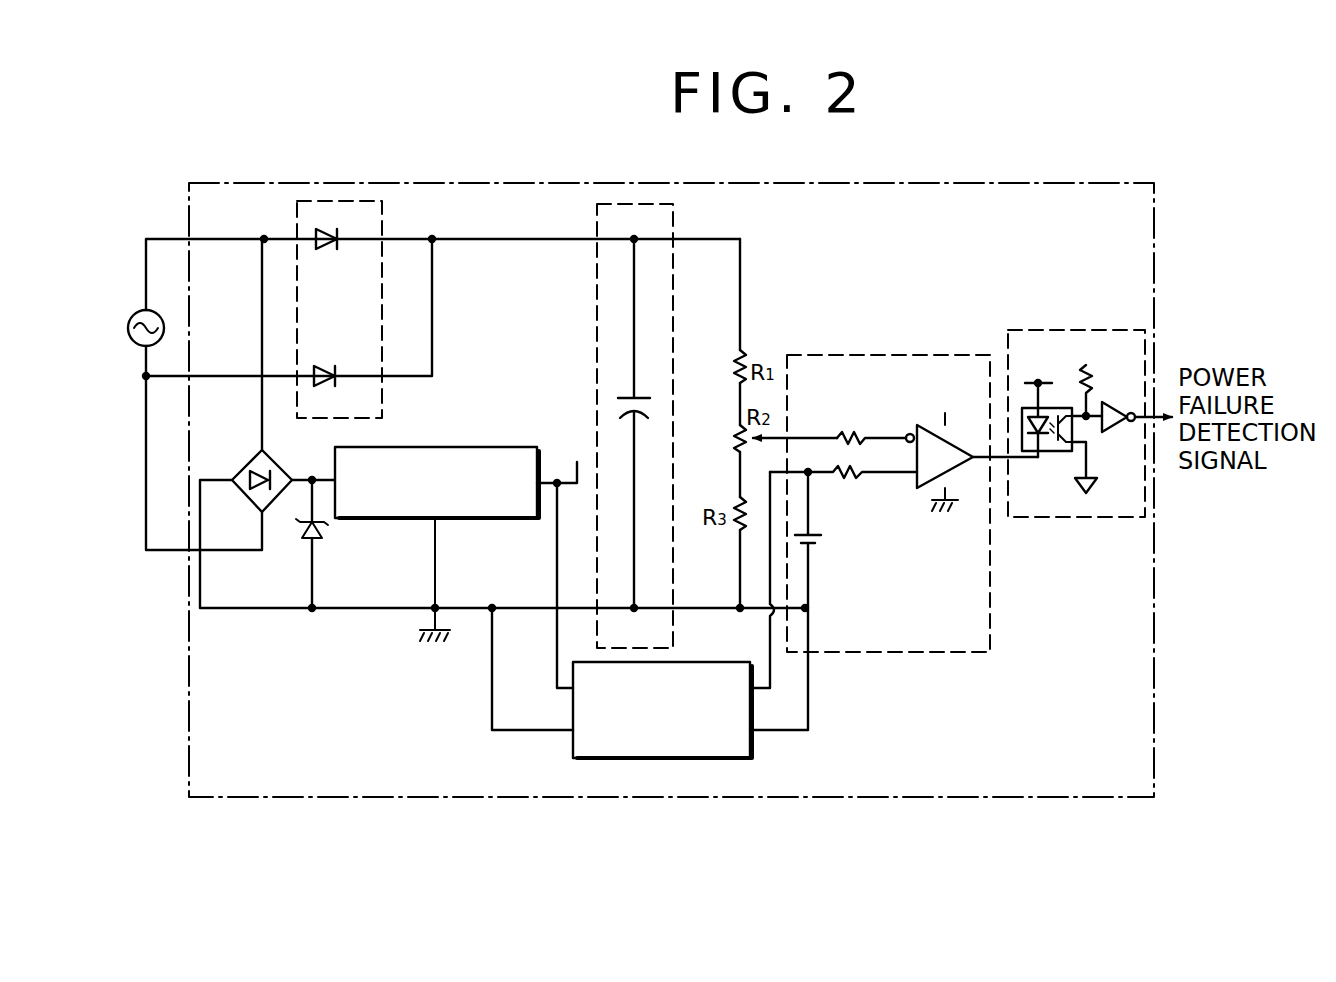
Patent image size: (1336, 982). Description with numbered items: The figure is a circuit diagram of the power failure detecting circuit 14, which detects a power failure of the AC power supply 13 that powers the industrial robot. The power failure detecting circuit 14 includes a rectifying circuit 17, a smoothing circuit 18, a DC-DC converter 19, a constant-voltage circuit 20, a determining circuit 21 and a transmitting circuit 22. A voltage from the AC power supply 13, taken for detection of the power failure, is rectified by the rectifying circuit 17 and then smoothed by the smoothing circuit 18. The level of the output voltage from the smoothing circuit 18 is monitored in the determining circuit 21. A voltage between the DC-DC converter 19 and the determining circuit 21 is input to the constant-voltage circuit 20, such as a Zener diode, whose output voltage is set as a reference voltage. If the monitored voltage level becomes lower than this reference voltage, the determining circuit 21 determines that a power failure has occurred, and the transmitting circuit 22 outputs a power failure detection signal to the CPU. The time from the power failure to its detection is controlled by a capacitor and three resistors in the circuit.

The AC power supply 13 is at (178, 298).
The power failure detecting circuit 14 is at (775, 184).
The rectifying circuit 17 is at (384, 225).
The smoothing circuit 18 is at (675, 222).
The DC-DC converter 19 is at (499, 447).
The constant-voltage circuit 20 is at (752, 742).
The determining circuit 21 is at (888, 355).
The transmitting circuit 22 is at (1064, 328).